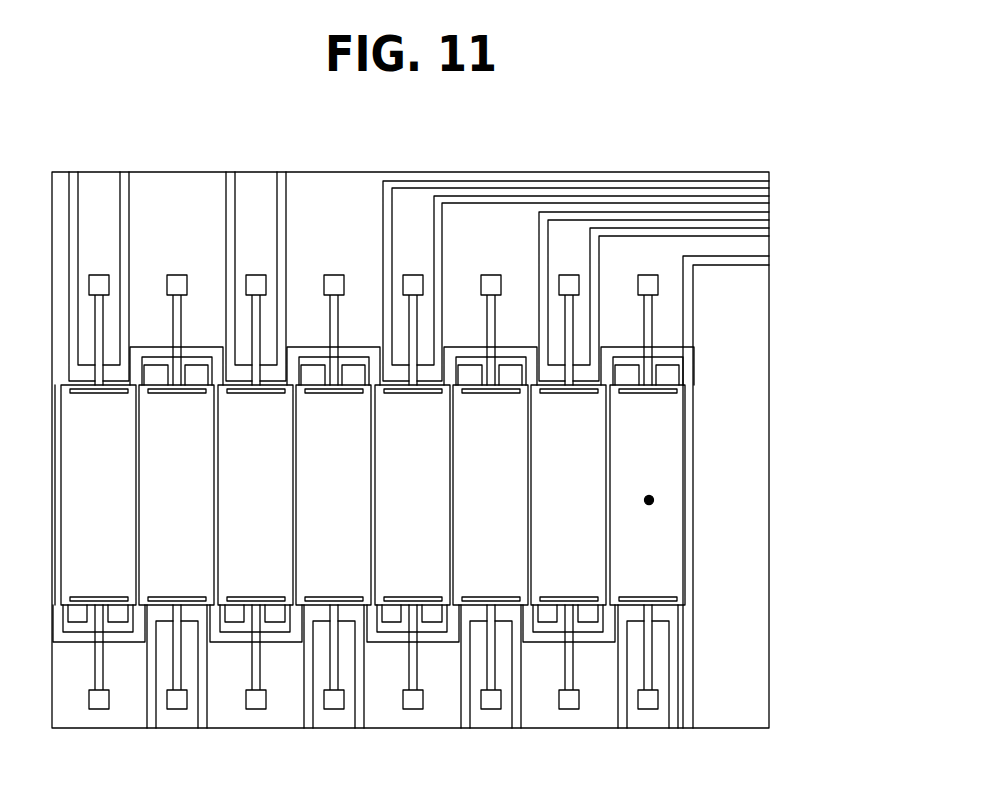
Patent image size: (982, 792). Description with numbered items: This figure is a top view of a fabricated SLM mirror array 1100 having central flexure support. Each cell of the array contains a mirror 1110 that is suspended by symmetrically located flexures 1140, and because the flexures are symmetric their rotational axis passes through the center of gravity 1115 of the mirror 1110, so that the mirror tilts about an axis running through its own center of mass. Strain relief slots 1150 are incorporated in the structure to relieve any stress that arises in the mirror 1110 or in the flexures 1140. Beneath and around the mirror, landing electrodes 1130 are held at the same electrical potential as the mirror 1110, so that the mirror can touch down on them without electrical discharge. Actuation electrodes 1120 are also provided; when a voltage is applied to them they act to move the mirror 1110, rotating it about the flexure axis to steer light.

The SLM mirror array 1100 is at (778, 165).
The mirror 1110 is at (665, 546).
The center of gravity 1115 is at (662, 497).
The actuation electrodes 1120 is at (278, 615).
The landing electrodes 1130 is at (593, 643).
The flexures 1140 is at (657, 329).
The strain relief slots 1150 is at (590, 390).